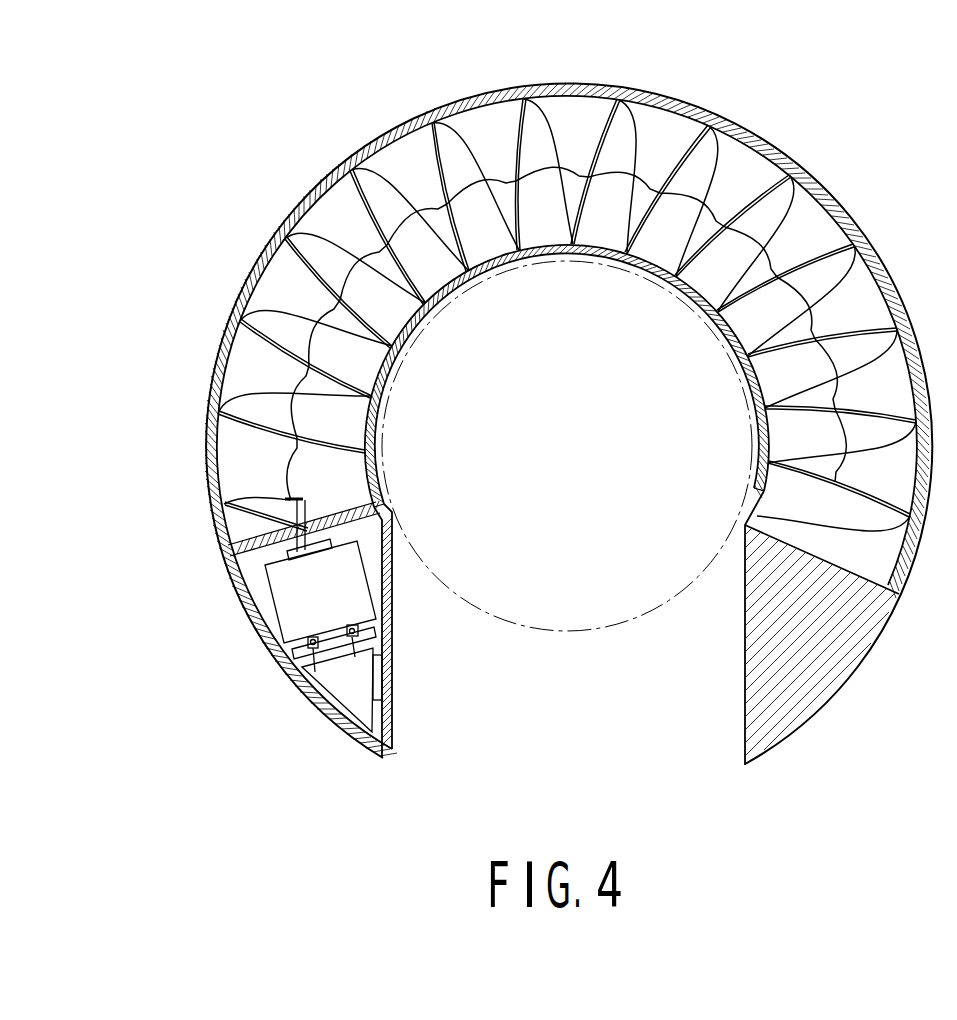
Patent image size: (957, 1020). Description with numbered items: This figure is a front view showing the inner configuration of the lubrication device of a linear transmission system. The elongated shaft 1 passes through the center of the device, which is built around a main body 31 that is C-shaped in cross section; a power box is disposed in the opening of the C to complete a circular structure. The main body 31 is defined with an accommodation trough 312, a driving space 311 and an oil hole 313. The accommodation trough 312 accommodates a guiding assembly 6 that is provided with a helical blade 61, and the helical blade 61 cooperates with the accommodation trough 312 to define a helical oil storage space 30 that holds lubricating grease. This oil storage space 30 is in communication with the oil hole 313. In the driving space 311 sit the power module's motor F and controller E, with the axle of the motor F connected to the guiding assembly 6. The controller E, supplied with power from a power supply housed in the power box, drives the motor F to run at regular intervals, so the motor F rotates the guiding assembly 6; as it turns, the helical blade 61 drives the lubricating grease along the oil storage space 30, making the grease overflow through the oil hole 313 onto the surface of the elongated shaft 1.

The elongated shaft 1 is at (535, 603).
The guiding assembly 6 is at (705, 152).
The helical blade 61 is at (786, 170).
The oil storage space 30 is at (487, 127).
The main body 31 is at (302, 208).
The driving space 311 is at (348, 717).
The accommodation trough 312 is at (255, 378).
The oil hole 313 is at (752, 494).
The motor F is at (290, 588).
The controller E is at (342, 680).